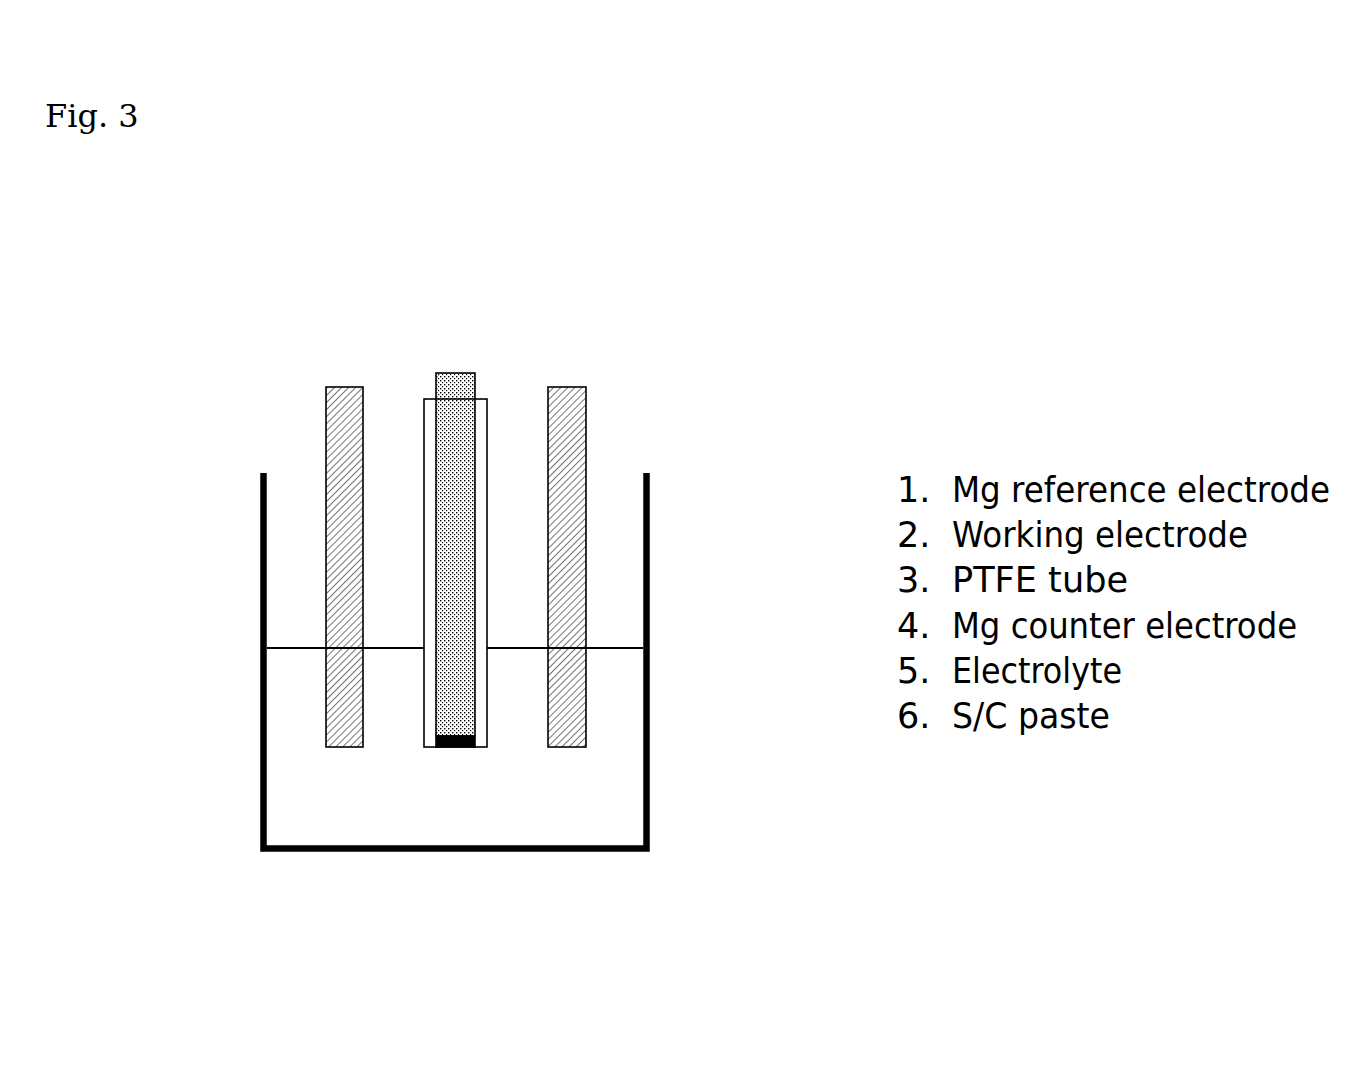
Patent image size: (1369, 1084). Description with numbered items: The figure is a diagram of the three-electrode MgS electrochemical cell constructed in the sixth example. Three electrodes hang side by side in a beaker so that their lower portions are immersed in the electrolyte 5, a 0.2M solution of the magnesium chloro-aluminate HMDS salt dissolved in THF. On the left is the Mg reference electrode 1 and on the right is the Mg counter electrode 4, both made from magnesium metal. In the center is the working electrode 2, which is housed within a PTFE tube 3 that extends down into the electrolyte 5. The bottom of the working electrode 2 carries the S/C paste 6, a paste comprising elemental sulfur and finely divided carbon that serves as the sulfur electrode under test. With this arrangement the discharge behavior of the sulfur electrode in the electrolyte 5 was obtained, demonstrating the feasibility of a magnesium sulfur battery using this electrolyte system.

The Mg reference electrode 1 is at (314, 436).
The working electrode 2 is at (449, 366).
The PTFE tube 3 is at (488, 422).
The Mg counter electrode 4 is at (599, 447).
The electrolyte 5 is at (622, 797).
The S/C paste 6 is at (446, 750).